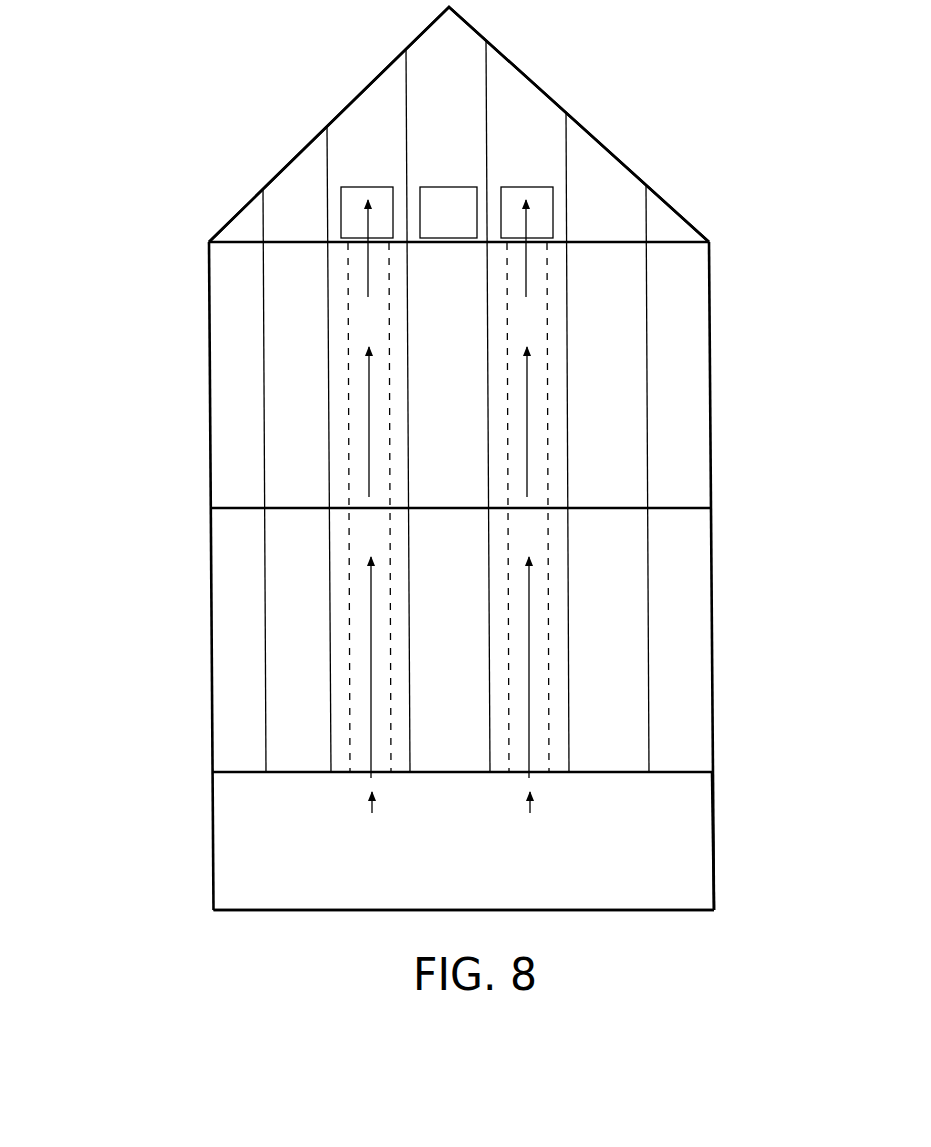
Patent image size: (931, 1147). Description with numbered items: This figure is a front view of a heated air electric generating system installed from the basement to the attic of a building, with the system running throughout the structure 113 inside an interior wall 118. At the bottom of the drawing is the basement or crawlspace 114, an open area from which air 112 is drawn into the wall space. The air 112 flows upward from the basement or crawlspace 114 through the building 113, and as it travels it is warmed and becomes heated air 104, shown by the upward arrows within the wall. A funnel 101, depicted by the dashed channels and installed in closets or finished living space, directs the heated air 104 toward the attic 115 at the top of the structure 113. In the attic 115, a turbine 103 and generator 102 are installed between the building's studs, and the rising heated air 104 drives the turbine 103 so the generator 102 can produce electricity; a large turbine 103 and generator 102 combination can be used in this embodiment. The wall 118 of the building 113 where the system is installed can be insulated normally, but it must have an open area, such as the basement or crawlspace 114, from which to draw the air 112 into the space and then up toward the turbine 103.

The structure 113 is at (126, 155).
The attic 115 is at (373, 78).
The interior wall 118 is at (328, 353).
The funnel 101 is at (388, 288).
The heated air 104 is at (370, 613).
The turbine 103 is at (392, 185).
The generator 102 is at (468, 222).
The air 112 is at (357, 796).
The basement or crawlspace 114 is at (703, 855).